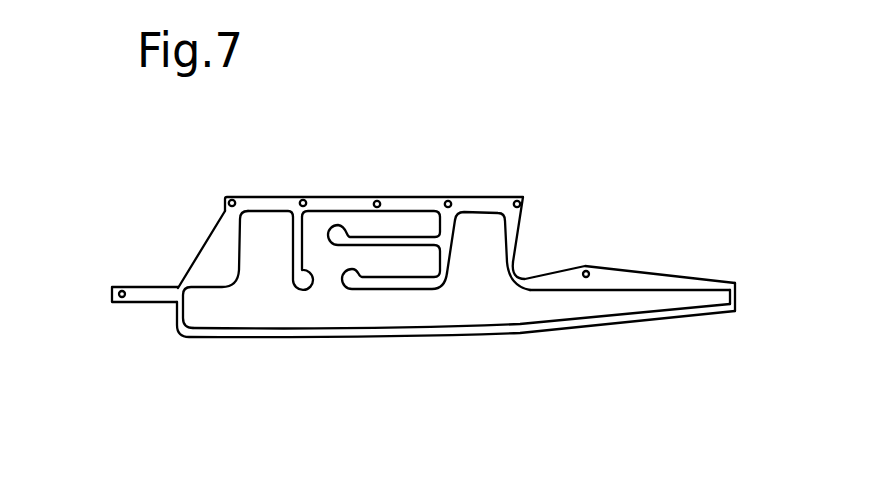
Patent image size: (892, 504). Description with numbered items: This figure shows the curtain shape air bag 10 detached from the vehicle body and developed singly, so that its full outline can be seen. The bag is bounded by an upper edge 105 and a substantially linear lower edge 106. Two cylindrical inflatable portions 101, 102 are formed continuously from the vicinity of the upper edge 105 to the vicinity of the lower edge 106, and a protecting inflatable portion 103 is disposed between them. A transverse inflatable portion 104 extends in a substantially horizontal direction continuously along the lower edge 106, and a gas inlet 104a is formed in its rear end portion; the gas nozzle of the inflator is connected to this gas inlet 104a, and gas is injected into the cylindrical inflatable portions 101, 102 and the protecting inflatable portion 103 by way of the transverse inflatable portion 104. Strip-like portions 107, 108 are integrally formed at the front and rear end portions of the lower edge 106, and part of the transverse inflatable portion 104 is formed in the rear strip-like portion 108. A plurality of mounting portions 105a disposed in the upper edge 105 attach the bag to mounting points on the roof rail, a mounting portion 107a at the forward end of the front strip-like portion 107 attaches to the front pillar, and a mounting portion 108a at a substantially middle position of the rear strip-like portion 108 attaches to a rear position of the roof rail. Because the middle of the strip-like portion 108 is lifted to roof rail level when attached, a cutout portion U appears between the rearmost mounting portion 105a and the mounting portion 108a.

The curtain shape air bag 10 is at (243, 379).
The cylindrical inflatable portion 101 is at (237, 243).
The cylindrical inflatable portion 102 is at (482, 262).
The protecting inflatable portion 103 is at (335, 262).
The transverse inflatable portion 104 is at (417, 316).
The gas inlet 104a is at (738, 303).
The upper edge 105 is at (418, 197).
The mounting portions 105a is at (230, 198).
The lower edge 106 is at (464, 339).
The strip-like portion 107 is at (138, 303).
The mounting portion 107a is at (119, 291).
The strip-like portion 108 is at (635, 323).
The mounting portion 108a is at (591, 273).
The cutout portion U is at (554, 239).